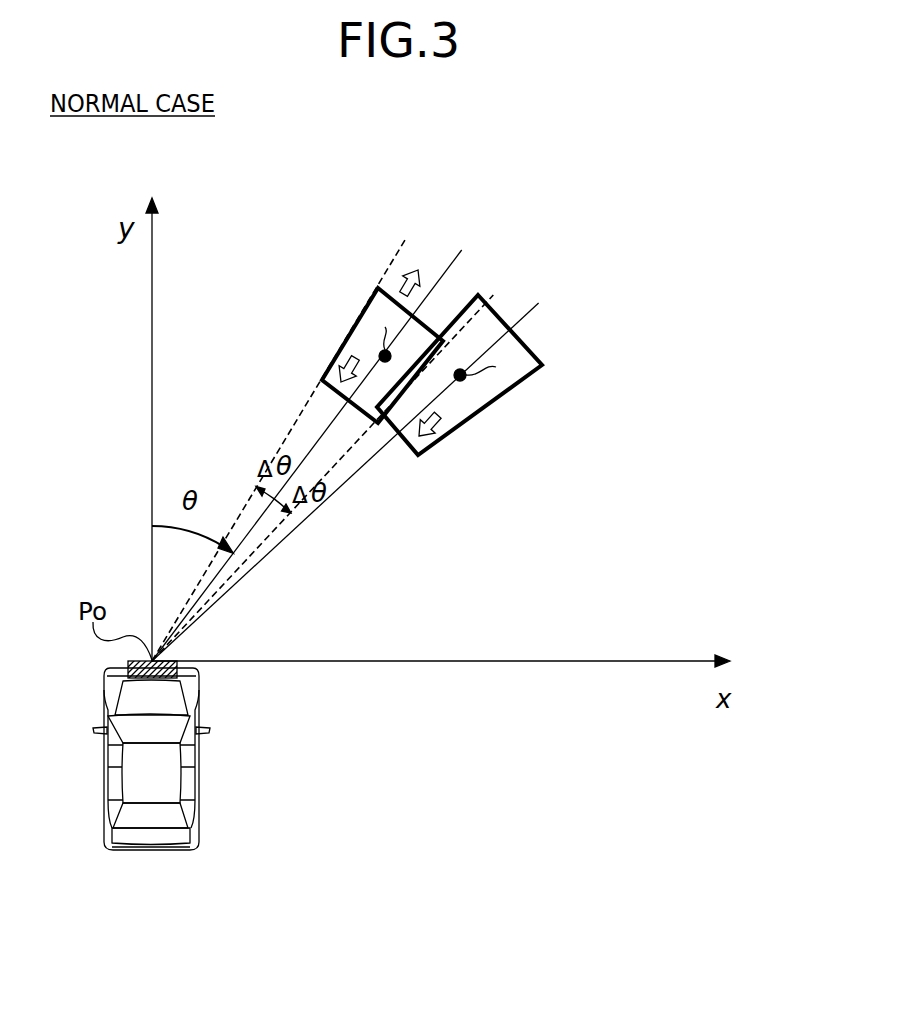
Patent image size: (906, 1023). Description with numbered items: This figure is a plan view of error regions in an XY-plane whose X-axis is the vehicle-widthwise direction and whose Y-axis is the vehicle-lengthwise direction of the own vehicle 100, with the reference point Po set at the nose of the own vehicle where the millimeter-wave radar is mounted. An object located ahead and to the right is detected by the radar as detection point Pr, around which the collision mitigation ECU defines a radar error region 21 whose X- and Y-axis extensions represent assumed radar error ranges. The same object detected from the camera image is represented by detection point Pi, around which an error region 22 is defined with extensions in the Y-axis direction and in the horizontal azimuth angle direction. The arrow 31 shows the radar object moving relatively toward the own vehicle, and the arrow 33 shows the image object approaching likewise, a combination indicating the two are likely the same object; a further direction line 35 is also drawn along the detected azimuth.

The radar error region 21 is at (355, 345).
The error region 22 is at (467, 407).
The arrow 31 is at (330, 362).
The arrow 33 is at (425, 447).
The azimuth direction line of detected object 35 is at (407, 262).
The own vehicle 100 is at (198, 708).